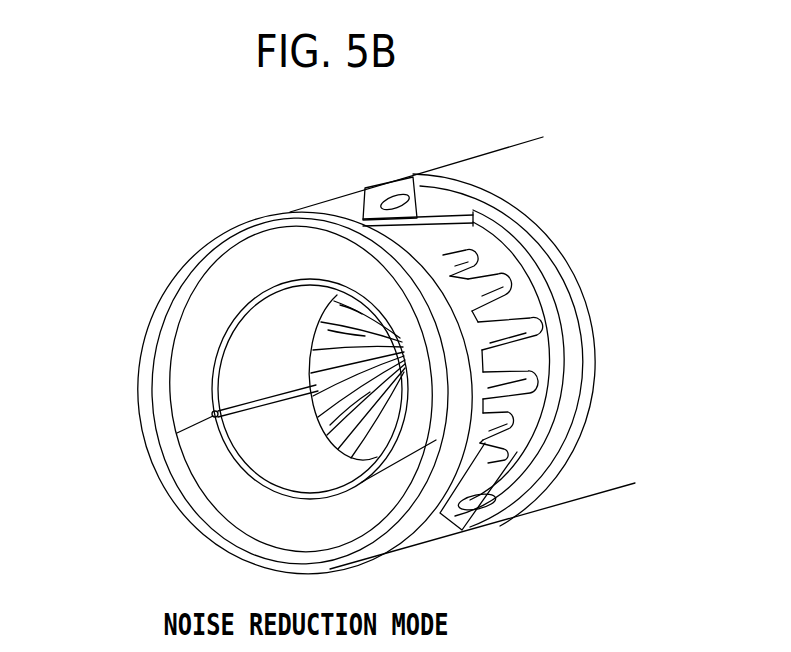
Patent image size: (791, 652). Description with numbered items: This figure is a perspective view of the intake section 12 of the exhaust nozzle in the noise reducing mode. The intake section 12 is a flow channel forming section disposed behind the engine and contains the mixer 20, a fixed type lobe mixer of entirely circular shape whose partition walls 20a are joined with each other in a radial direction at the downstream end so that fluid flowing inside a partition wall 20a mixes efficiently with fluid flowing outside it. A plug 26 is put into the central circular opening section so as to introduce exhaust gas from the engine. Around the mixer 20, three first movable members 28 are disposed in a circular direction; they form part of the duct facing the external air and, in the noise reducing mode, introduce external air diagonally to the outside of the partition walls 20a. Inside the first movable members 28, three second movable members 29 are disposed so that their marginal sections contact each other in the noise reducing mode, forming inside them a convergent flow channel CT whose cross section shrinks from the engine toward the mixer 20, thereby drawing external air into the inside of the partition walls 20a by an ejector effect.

The intake section 12 is at (541, 541).
The mixer 20 is at (556, 358).
The partition wall 20a is at (484, 290).
The plug 26 is at (487, 168).
The first movable member 28 is at (254, 257).
The second movable member 29 is at (220, 328).
The convergent flow channel CT is at (229, 368).